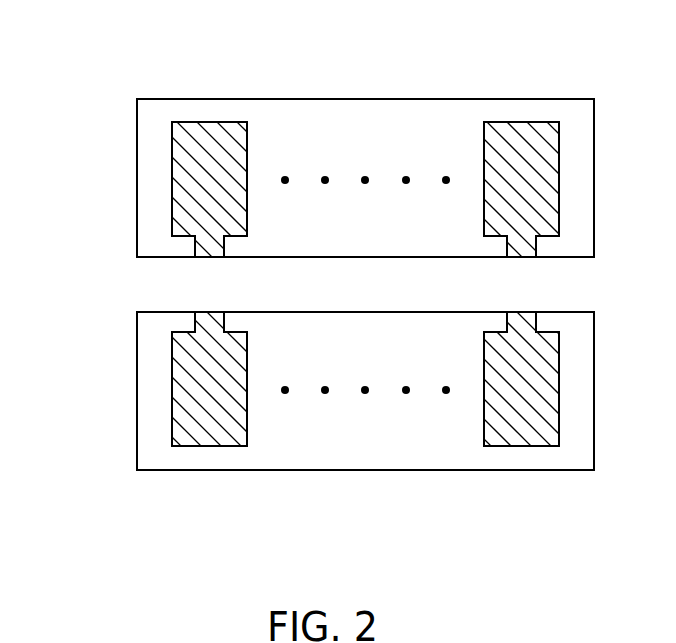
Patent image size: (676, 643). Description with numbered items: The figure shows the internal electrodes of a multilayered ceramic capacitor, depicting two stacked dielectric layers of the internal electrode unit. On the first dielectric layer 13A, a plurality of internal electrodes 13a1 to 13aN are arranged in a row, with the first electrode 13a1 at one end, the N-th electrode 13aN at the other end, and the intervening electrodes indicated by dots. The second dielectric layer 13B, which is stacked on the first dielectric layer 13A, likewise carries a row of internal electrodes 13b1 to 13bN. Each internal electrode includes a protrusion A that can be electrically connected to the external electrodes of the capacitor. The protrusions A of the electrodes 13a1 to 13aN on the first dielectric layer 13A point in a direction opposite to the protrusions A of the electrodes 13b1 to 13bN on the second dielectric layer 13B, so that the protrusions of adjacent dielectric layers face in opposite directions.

The first dielectric layer 13A is at (150, 179).
The second dielectric layer 13B is at (150, 391).
The internal electrode 13a1 is at (207, 140).
The internal electrode 13aN is at (519, 140).
The internal electrode 13b1 is at (207, 427).
The internal electrode 13bN is at (519, 427).
The protrusion A is at (207, 253).